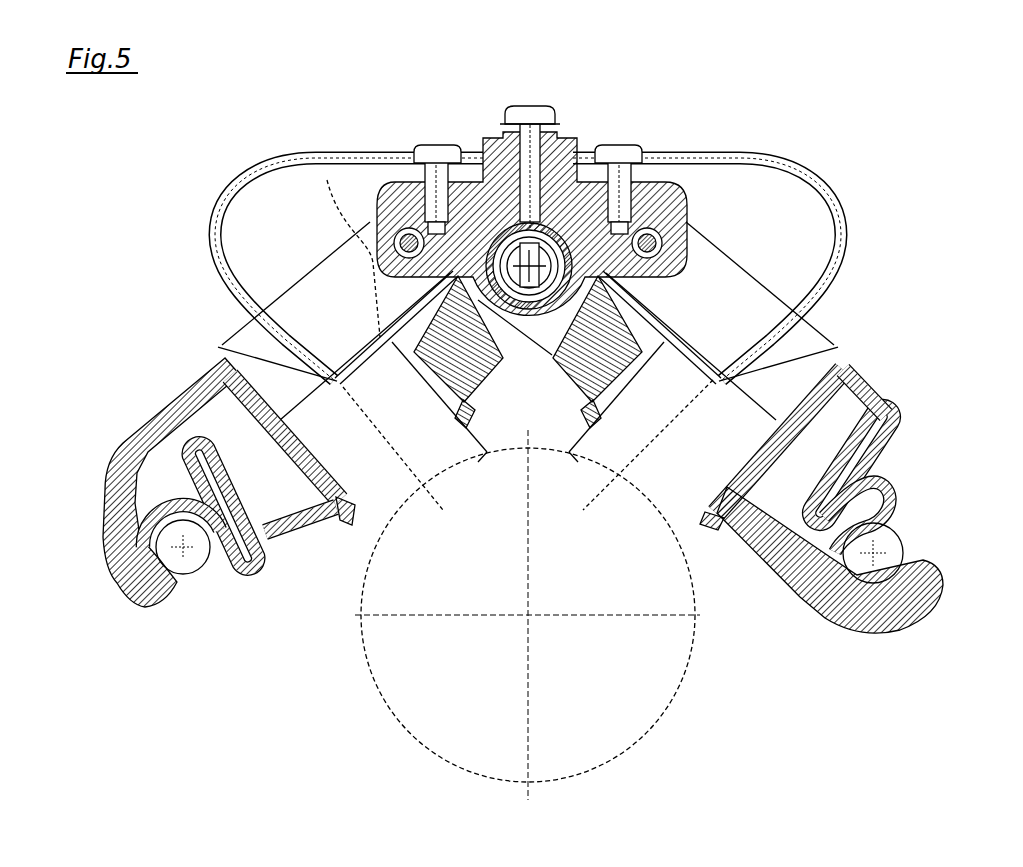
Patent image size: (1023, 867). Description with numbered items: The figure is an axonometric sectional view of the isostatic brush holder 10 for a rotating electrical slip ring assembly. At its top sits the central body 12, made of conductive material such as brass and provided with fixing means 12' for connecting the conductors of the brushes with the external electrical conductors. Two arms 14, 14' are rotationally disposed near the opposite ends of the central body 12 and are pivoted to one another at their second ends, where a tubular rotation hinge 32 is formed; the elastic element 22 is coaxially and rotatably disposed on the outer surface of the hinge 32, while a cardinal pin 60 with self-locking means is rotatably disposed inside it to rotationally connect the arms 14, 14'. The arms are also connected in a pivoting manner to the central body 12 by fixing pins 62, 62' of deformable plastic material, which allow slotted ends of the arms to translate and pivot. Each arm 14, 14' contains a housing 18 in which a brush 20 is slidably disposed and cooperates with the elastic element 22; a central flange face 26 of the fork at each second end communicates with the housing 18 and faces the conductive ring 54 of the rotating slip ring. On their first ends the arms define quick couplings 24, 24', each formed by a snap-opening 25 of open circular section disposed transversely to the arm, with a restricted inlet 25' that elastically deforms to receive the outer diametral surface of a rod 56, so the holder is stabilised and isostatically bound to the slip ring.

The isostatic brush holder 10 is at (917, 166).
The central body 12 is at (570, 144).
The fixing means 12' is at (532, 81).
The arm 14 is at (297, 317).
The arm 14' is at (771, 321).
The housing 18 is at (310, 568).
The brush 20 is at (347, 562).
The elastic element 22 is at (317, 323).
The quick coupling 24 is at (902, 466).
The quick coupling 24' is at (147, 482).
The snap-opening 25 is at (510, 520).
The restricted inlet 25' is at (582, 594).
The central flange face 26 is at (372, 252).
The tubular rotation hinge 32 is at (640, 130).
The conductive ring 54 is at (663, 717).
The rod 56 is at (160, 610).
The cardinal pin 60 is at (492, 182).
The fixing pin 62 is at (707, 239).
The fixing pin 62' is at (349, 229).